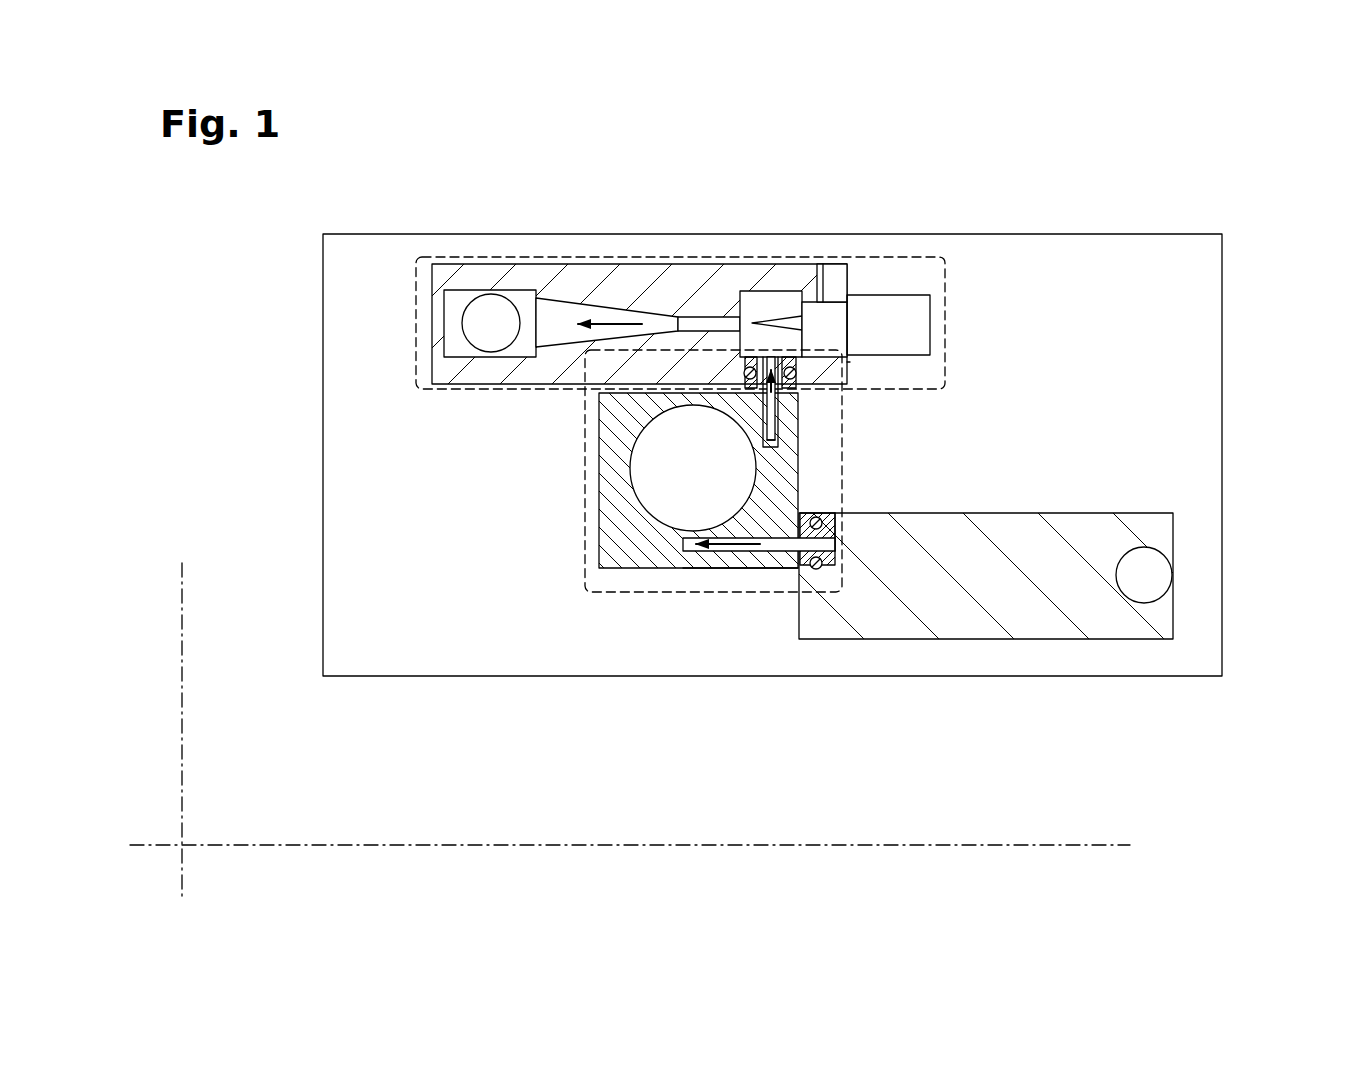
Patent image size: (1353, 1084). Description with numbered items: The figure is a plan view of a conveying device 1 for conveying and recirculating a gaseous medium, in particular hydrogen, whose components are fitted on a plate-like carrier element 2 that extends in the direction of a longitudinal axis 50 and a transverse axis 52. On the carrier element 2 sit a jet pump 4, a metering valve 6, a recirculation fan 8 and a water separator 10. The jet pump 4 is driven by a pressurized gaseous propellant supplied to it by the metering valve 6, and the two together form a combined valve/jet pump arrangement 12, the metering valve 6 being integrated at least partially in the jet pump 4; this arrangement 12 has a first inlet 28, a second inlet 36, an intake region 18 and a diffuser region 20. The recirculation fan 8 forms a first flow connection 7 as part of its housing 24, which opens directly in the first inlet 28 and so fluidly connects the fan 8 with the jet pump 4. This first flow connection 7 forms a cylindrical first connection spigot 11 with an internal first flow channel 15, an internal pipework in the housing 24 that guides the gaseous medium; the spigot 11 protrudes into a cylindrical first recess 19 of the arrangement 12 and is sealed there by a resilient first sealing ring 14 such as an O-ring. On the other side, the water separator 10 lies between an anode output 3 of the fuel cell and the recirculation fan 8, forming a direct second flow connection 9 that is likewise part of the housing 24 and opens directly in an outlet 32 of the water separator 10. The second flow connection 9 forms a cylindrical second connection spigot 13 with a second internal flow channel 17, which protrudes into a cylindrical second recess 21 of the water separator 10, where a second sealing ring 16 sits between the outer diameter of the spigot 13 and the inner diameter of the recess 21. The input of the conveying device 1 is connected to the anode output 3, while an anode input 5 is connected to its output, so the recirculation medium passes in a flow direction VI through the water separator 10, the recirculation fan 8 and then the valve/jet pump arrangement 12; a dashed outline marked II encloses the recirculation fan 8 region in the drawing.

The conveying device 1 is at (316, 201).
The plate-like carrier element 2 is at (1188, 262).
The anode output 3 is at (1157, 577).
The jet pump 4 is at (662, 264).
The anode input 5 is at (490, 296).
The metering valve 6 is at (889, 294).
The first flow connection 7 is at (745, 247).
The first inlet 28 is at (757, 330).
The recirculation fan 8 is at (691, 561).
The housing 24 is at (625, 568).
The second flow connection 9 is at (738, 568).
The water separator 10 is at (1160, 627).
The first connection spigot 11 is at (850, 362).
The combined valve/jet pump arrangement 12 is at (416, 330).
The second connection spigot 13 is at (853, 528).
The first sealing ring 14 is at (790, 386).
The first flow channel 15 is at (779, 440).
The second sealing ring 16 is at (840, 621).
The second flow channel 17 is at (772, 551).
The intake region 18 is at (745, 261).
The first recess 19 is at (795, 383).
The diffuser region 20 is at (583, 298).
The second recess 21 is at (822, 560).
The outlet 32 is at (846, 542).
The second inlet 36 is at (824, 270).
The longitudinal axis 50 is at (383, 845).
The transverse axis 52 is at (182, 760).
The detail view II is at (583, 545).
The flow direction VI is at (618, 323).